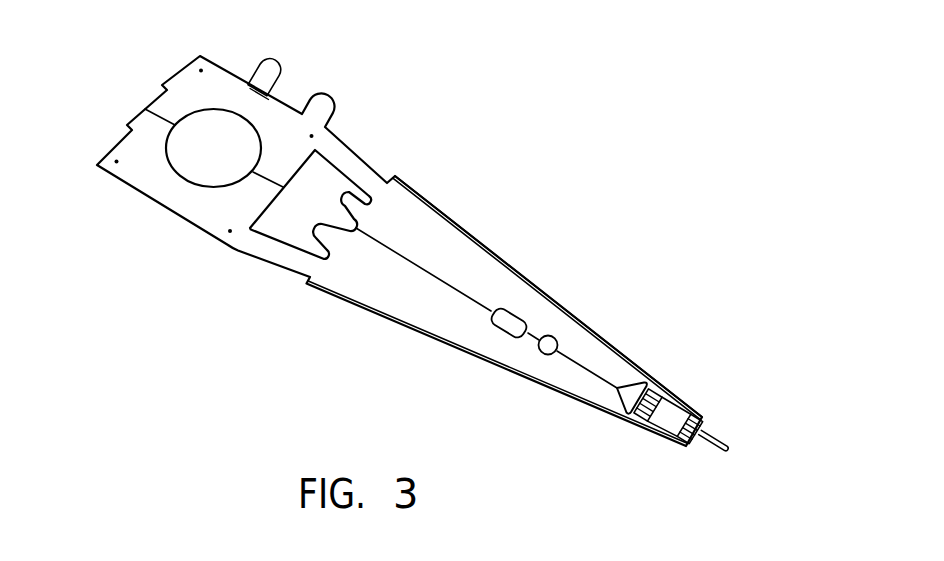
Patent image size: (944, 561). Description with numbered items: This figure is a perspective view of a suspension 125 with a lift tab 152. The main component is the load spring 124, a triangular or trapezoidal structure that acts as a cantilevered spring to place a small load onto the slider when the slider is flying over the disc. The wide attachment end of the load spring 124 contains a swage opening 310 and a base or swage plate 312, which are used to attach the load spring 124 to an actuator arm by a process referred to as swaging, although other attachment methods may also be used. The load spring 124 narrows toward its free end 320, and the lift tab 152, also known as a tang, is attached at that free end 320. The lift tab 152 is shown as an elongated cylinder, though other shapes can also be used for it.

The load spring 124 is at (425, 220).
The suspension 125 is at (415, 183).
The swage opening 310 is at (228, 113).
The base or swage plate 312 is at (277, 122).
The free end 320 is at (680, 397).
The lift tab 152 is at (715, 432).